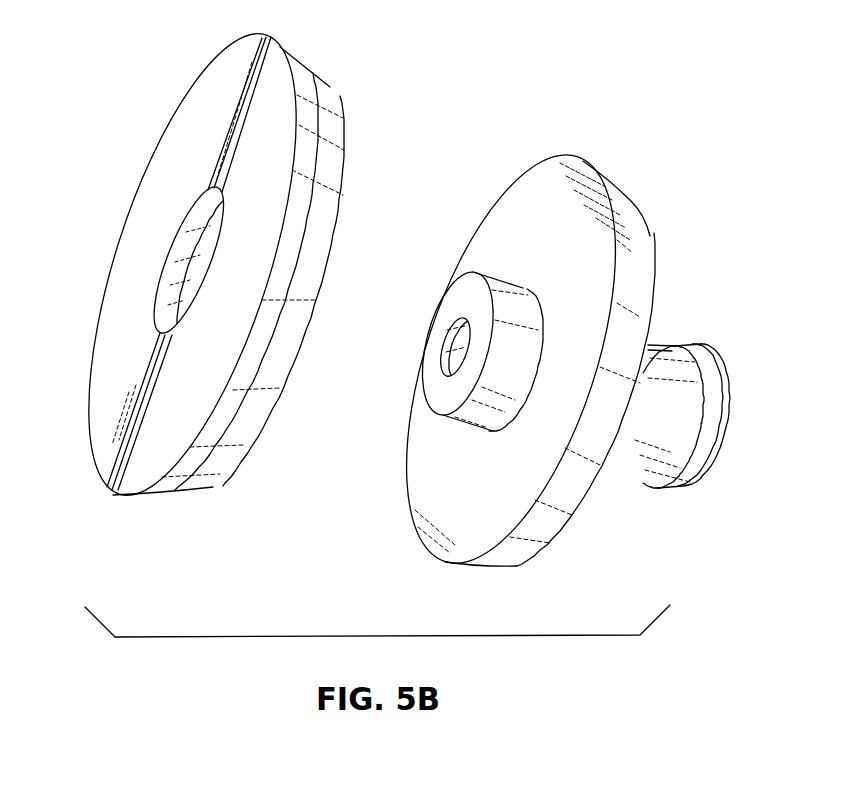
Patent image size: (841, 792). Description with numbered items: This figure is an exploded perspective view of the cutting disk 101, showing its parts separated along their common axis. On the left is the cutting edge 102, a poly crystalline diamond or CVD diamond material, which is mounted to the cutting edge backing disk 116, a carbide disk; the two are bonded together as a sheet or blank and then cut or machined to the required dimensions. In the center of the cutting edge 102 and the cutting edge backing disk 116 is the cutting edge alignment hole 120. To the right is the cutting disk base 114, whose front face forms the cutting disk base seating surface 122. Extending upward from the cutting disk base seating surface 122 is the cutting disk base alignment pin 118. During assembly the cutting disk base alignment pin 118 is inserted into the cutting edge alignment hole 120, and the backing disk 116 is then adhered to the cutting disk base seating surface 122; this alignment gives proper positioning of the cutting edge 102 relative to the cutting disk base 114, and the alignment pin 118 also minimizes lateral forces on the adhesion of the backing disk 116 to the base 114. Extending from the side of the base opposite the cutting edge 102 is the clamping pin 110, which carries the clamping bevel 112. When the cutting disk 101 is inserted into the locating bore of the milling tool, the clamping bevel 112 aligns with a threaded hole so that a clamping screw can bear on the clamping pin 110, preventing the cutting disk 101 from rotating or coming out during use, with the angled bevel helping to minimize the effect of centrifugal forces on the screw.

The cutting disk 101 is at (88, 116).
The cutting edge 102 is at (112, 493).
The cutting edge backing disk 116 is at (193, 493).
The cutting edge alignment hole 120 is at (197, 255).
The cutting disk base 114 is at (607, 190).
The cutting disk base seating surface 122 is at (547, 180).
The cutting disk base alignment pin 118 is at (462, 294).
The clamping bevel 112 is at (667, 345).
The clamping pin 110 is at (720, 357).